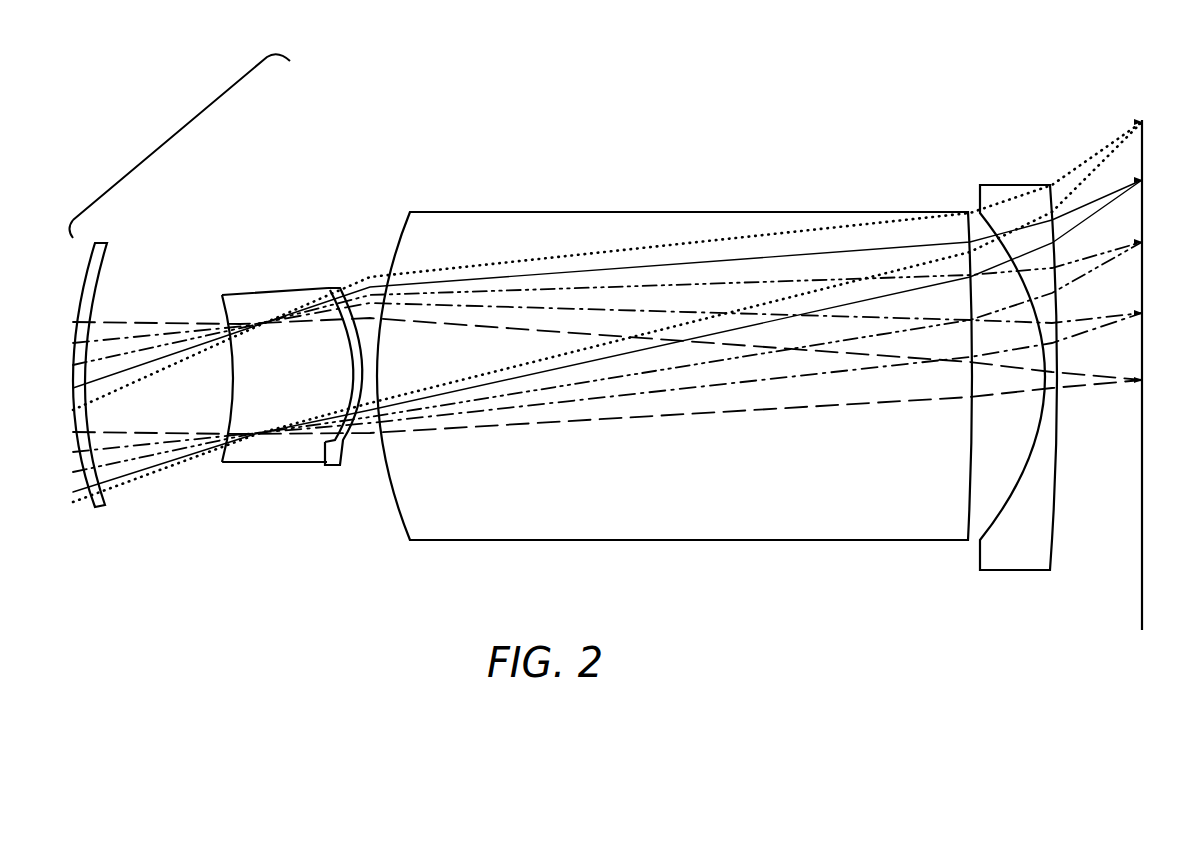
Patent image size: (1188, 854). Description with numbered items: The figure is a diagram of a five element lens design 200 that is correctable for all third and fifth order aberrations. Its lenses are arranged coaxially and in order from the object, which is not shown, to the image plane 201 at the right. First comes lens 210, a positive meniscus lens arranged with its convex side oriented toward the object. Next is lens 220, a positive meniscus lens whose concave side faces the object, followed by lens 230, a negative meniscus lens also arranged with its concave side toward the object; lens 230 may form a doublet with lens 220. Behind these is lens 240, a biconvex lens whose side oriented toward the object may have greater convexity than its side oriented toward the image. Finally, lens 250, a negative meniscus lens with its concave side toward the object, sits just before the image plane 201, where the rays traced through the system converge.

The five element lens design 200 is at (171, 137).
The image plane 201 is at (1143, 137).
The lens 210 is at (100, 243).
The lens 220 is at (280, 288).
The lens 230 is at (329, 288).
The lens 240 is at (707, 212).
The lens 250 is at (1000, 185).